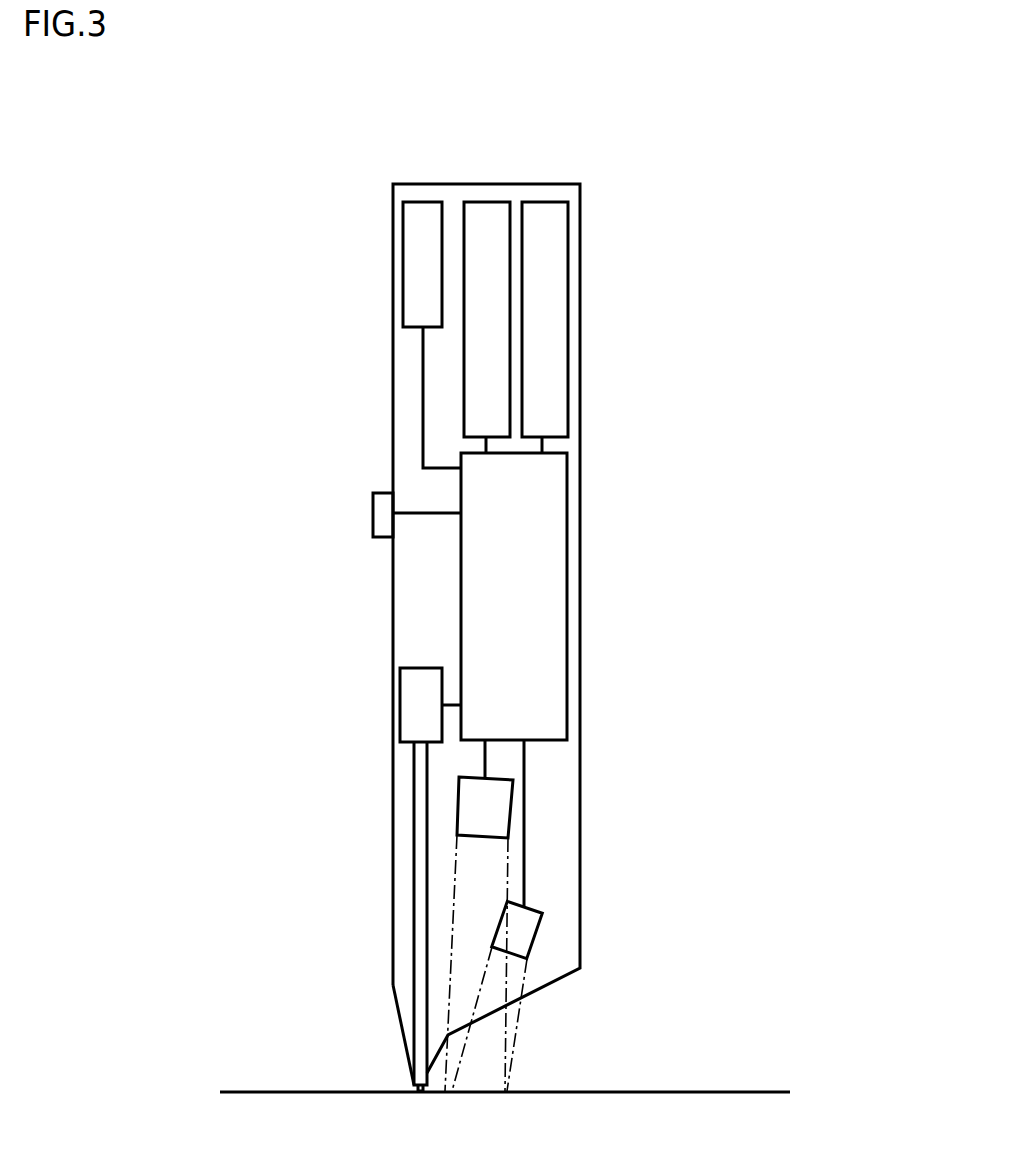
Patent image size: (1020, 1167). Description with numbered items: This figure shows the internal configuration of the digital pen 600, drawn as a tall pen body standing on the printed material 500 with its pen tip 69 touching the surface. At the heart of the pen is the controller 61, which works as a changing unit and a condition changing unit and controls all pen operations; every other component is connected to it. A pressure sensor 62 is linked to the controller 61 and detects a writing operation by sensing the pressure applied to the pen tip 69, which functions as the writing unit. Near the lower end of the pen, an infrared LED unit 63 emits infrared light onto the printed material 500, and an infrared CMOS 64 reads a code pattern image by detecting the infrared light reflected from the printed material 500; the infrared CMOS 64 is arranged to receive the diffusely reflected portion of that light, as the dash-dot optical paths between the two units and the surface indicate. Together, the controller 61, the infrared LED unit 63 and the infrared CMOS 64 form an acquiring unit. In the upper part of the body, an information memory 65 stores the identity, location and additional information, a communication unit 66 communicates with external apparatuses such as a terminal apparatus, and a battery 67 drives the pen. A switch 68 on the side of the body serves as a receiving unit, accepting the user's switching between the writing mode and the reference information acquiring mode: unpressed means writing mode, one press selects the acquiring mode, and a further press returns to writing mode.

The digital pen 600 is at (619, 150).
The controller 61 is at (570, 578).
The pressure sensor 62 is at (427, 667).
The infrared LED unit 63 is at (532, 943).
The infrared CMOS 64 is at (458, 808).
The information memory 65 is at (485, 200).
The communication unit 66 is at (403, 238).
The battery 67 is at (570, 313).
The switch 68 is at (373, 517).
The pen tip 69 is at (417, 1023).
The printed material 500 is at (247, 1091).